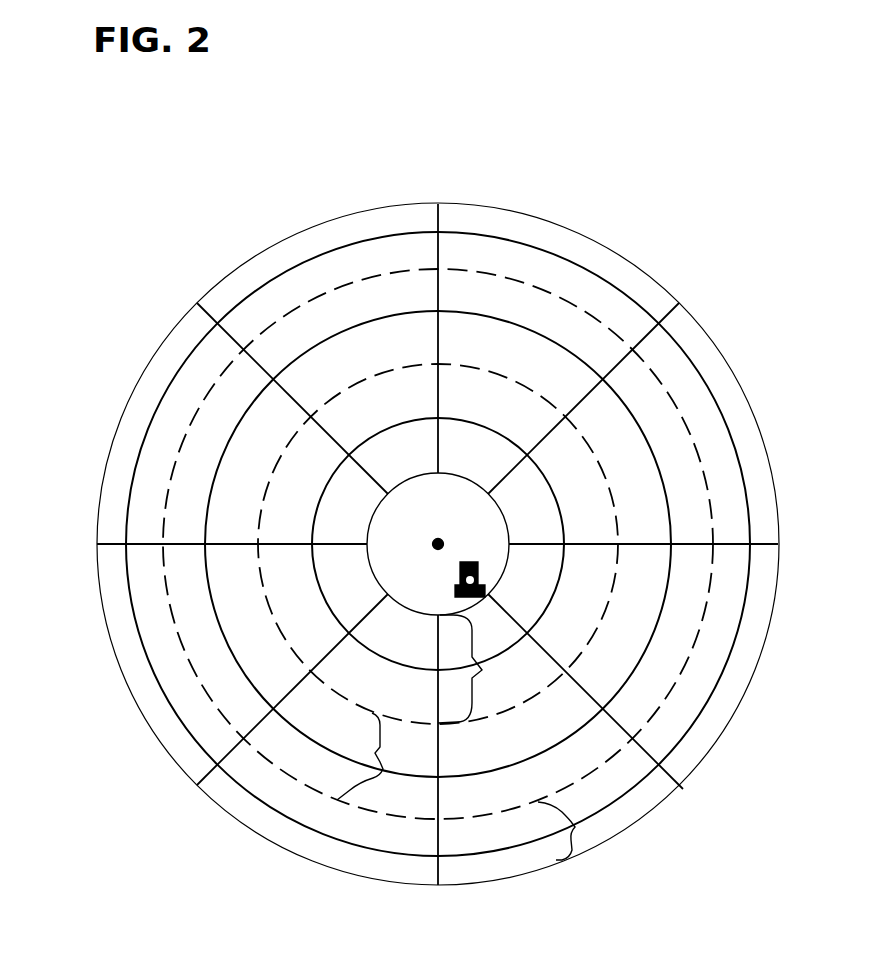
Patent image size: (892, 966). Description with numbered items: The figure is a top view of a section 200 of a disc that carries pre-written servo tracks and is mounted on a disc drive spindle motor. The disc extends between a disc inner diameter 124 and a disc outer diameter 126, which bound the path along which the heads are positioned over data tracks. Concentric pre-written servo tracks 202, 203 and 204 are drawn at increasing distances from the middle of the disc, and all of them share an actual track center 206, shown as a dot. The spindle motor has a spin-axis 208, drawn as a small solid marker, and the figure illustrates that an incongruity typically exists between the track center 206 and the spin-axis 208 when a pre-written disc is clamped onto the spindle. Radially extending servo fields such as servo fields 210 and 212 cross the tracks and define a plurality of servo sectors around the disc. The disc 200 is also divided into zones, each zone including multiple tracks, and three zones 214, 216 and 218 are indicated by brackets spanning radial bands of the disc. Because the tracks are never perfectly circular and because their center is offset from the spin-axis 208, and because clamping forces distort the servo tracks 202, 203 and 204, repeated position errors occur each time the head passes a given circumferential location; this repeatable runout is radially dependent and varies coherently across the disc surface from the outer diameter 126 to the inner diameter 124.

The section of a disc 200 is at (630, 165).
The disc inner diameter 124 is at (370, 523).
The disc outer diameter 126 is at (98, 512).
The pre-written servo track 202 is at (163, 695).
The pre-written servo track 203 is at (208, 597).
The pre-written servo track 204 is at (318, 592).
The actual track center 206 is at (442, 540).
The spin-axis 208 is at (460, 575).
The servo field 210 is at (675, 307).
The servo field 212 is at (769, 544).
The zone 214 is at (576, 826).
The zone 216 is at (381, 771).
The zone 218 is at (483, 670).